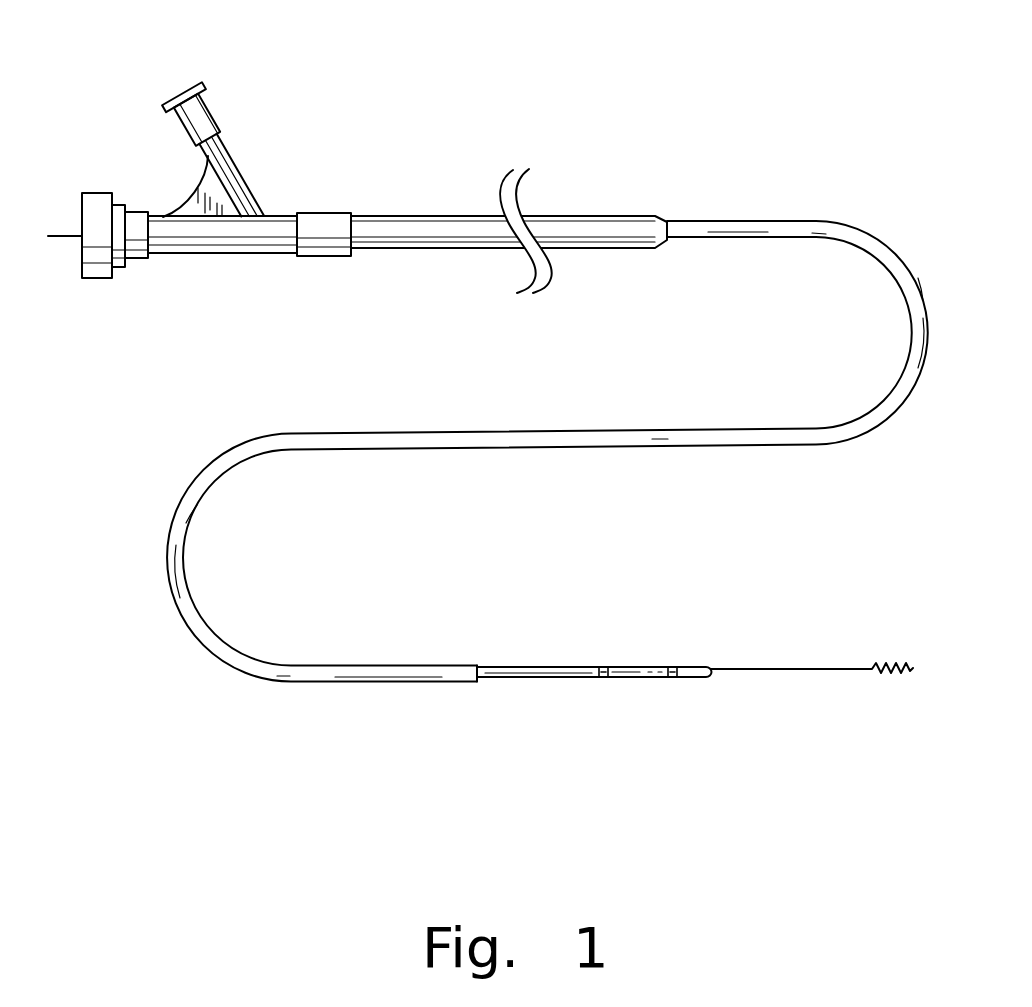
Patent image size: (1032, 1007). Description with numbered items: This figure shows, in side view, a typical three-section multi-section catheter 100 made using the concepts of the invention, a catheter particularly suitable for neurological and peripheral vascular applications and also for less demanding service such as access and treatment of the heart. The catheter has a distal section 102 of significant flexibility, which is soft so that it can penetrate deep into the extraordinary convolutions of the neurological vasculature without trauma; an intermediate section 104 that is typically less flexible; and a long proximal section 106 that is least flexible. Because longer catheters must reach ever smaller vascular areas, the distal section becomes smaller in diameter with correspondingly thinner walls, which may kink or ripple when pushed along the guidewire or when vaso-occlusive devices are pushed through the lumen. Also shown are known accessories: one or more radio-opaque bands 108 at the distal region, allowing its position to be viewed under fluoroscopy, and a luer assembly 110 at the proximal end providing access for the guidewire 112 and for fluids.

The multi-section catheter 100 is at (784, 69).
The distal section 102 is at (482, 703).
The intermediate section 104 is at (433, 424).
The proximal section 106 is at (662, 162).
The radio-opaque bands 108 is at (603, 666).
The luer assembly 110 is at (200, 254).
The guidewire 112 is at (60, 234).